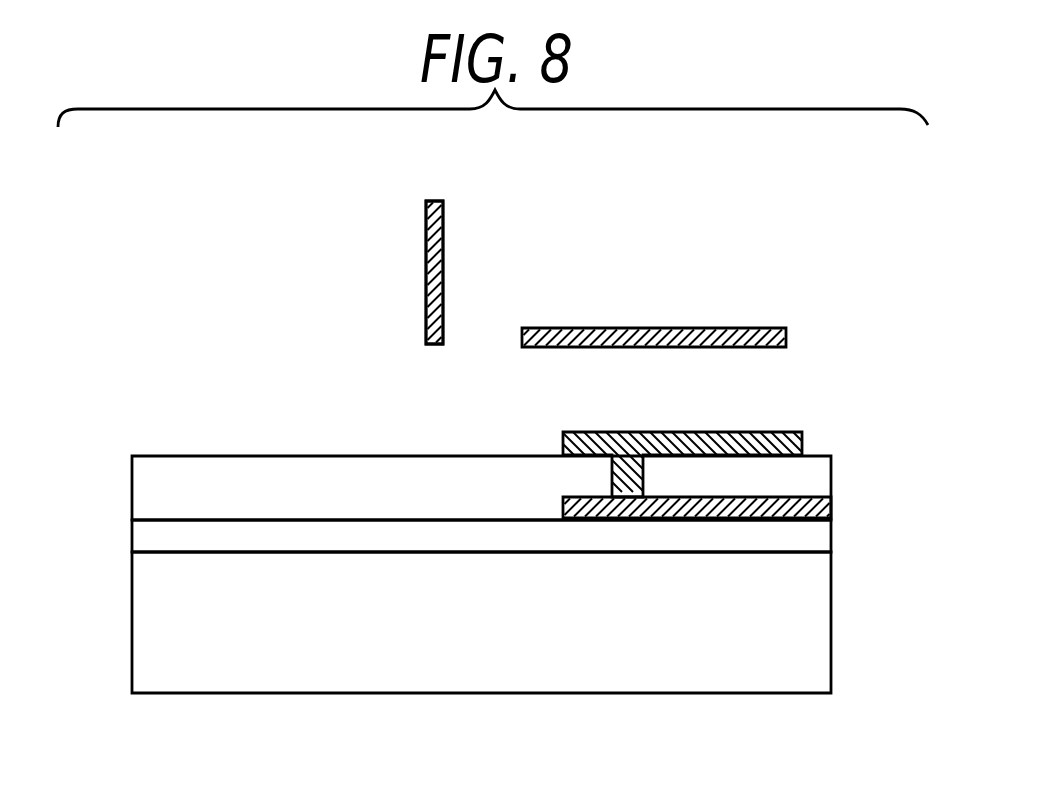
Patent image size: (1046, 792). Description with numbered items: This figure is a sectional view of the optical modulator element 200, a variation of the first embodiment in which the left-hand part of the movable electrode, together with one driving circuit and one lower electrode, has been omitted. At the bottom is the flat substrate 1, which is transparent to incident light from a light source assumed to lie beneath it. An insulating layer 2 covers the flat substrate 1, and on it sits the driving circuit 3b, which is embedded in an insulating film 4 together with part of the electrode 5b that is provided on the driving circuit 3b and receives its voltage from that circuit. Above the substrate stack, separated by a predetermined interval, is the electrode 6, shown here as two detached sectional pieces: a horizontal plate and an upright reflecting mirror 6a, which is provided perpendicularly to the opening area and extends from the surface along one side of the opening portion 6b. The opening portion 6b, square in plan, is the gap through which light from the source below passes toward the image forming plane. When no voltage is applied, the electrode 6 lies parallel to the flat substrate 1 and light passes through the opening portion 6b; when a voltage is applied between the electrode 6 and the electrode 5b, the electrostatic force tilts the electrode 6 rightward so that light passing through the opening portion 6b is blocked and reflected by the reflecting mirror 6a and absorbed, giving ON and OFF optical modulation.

The flat substrate 1 is at (827, 623).
The insulating layer 2 is at (822, 547).
The driving circuit 3b is at (827, 508).
The insulating film 4 is at (823, 472).
The electrode 5b is at (800, 437).
The electrode 6 is at (427, 340).
The reflecting mirror 6a is at (443, 217).
The opening portion 6b is at (487, 330).
The optical modulator element 200 is at (780, 297).